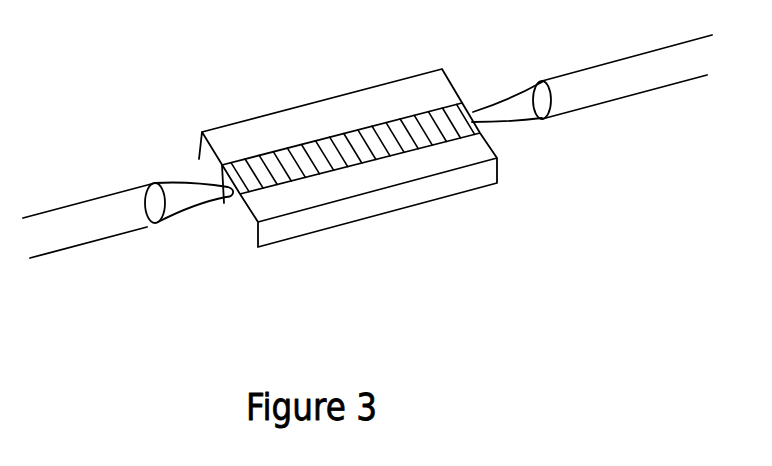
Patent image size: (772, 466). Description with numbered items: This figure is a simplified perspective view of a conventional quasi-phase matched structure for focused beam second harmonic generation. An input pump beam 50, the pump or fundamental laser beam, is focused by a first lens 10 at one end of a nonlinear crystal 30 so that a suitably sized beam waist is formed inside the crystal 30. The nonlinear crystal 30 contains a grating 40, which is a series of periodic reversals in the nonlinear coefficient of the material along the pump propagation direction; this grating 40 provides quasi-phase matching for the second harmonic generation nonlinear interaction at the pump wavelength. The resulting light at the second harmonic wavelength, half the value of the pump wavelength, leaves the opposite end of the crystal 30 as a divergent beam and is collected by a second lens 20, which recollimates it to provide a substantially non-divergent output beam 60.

The first lens 10 is at (154, 223).
The second lens 20 is at (548, 112).
The nonlinear crystal 30 is at (380, 207).
The grating 40 is at (407, 118).
The input pump beam 50 is at (57, 245).
The output beam 60 is at (645, 78).